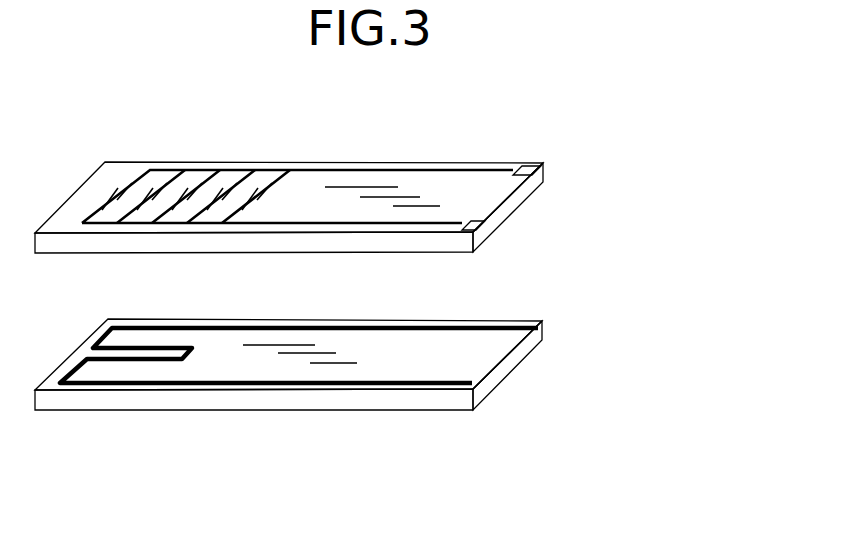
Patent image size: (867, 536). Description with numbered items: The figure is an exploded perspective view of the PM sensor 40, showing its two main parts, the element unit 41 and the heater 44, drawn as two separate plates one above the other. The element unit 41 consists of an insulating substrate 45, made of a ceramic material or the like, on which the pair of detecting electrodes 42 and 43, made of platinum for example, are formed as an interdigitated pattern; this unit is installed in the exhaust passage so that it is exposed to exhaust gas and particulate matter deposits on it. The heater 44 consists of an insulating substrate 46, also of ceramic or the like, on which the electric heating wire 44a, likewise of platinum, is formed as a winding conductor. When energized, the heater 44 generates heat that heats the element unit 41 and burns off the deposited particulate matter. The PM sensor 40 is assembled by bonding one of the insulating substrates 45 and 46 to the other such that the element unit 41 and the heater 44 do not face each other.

The PM sensor 40 is at (640, 90).
The element unit 41 is at (576, 145).
The detecting electrode 42 is at (178, 177).
The detecting electrode 43 is at (212, 190).
The heater 44 is at (576, 305).
The electric heating wire 44a is at (157, 382).
The insulating substrate 45 is at (498, 217).
The insulating substrate 46 is at (510, 361).